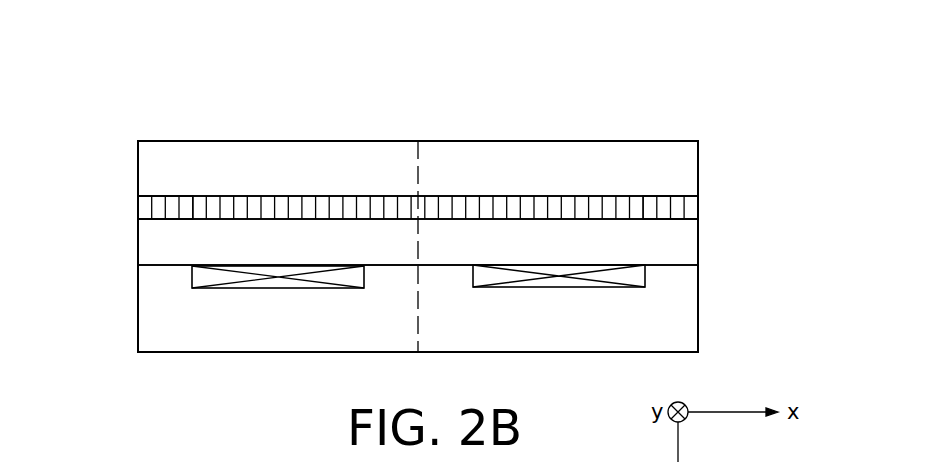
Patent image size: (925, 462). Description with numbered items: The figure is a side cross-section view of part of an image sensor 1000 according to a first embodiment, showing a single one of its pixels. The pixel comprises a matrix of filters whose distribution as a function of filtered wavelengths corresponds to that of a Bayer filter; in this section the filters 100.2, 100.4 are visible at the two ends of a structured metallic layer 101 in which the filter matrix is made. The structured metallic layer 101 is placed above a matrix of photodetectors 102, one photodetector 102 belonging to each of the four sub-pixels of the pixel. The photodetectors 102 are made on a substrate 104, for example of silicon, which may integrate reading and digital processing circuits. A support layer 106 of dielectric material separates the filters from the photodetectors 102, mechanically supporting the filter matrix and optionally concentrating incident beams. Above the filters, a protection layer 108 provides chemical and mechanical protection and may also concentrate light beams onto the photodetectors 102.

The image sensor 1000 is at (700, 122).
The protection layer 108 is at (202, 163).
The structured metallic layer 101 is at (460, 203).
The filter 100.2 is at (158, 208).
The filter 100.4 is at (680, 204).
The support layer 106 is at (677, 247).
The substrate 104 is at (677, 330).
The photodetector 102 is at (282, 282).